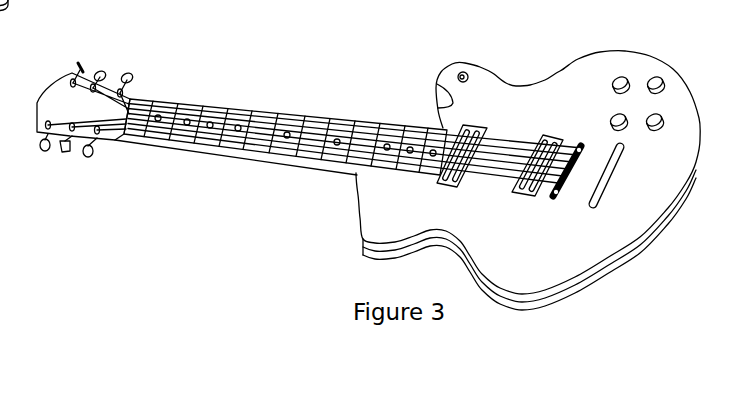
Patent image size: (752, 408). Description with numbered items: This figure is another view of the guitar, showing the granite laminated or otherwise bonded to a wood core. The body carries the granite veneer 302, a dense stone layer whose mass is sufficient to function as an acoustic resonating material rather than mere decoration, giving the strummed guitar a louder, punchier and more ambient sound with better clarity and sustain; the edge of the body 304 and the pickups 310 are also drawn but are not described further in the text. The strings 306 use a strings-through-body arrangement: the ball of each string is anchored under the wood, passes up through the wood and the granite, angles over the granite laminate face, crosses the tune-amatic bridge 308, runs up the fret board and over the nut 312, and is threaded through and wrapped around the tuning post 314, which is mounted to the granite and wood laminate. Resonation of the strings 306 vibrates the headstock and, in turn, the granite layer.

The granite veneer 302 is at (527, 297).
The body side wall 304 is at (607, 278).
The strings 306 is at (348, 107).
The tune-amatic bridge 308 is at (580, 145).
The pickup 310 is at (530, 155).
The nut 312 is at (145, 95).
The tuning post 314 is at (80, 66).